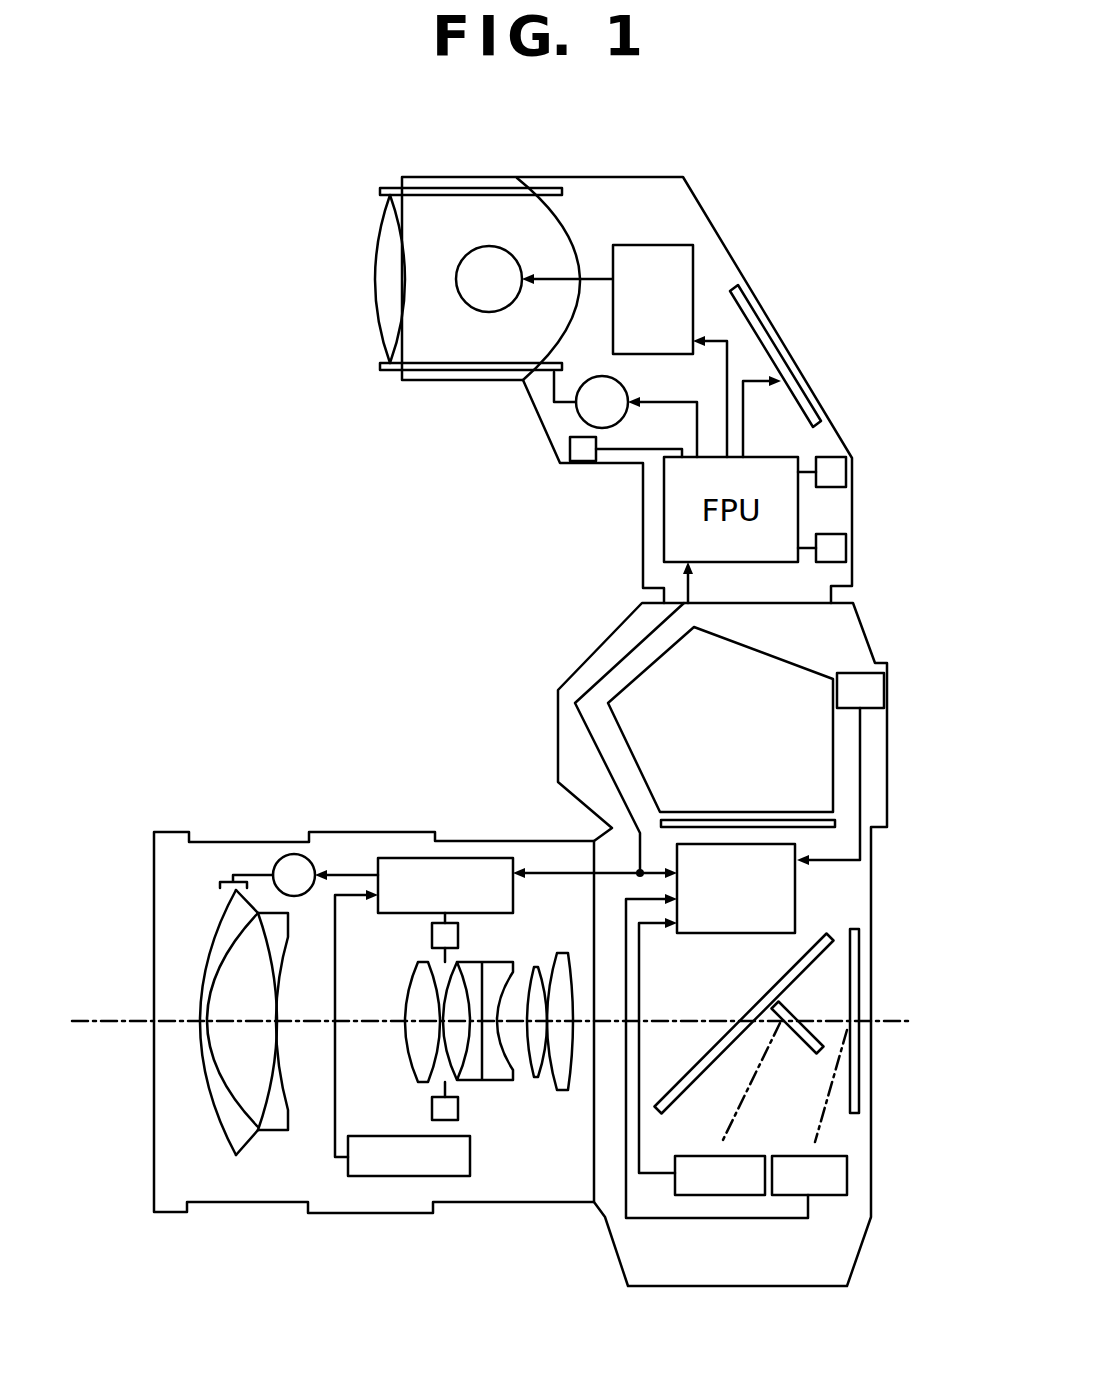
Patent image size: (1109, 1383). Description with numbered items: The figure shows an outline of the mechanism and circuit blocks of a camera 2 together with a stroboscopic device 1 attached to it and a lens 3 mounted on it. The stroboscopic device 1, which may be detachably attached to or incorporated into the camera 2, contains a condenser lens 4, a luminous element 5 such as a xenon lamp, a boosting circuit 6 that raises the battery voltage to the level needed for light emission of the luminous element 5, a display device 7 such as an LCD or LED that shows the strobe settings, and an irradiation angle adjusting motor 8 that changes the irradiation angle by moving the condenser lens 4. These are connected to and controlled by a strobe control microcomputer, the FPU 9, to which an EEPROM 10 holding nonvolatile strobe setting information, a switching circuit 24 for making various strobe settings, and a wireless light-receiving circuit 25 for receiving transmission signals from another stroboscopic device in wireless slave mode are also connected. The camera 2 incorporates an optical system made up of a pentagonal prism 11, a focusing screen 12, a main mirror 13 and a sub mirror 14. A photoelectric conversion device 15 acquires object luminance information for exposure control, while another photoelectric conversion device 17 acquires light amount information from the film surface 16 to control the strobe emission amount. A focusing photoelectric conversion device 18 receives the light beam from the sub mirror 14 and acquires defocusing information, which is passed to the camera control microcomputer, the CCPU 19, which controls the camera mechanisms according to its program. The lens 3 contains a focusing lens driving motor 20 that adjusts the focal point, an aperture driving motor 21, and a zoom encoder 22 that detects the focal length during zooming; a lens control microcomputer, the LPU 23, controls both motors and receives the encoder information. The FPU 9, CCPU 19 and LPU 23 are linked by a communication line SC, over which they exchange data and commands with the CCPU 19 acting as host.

The stroboscopic device 1 is at (604, 176).
The camera 2 is at (670, 1286).
The lens 3 is at (215, 1213).
The condenser lens 4 is at (375, 278).
The luminous element 5 is at (490, 246).
The boosting circuit 6 is at (693, 252).
The display device 7 is at (768, 316).
The irradiation angle adjusting motor 8 is at (573, 412).
The strobe control microcomputer (FPU) 9 is at (800, 523).
The EEPROM 10 is at (846, 548).
The pentagonal prism 11 is at (810, 667).
The focusing screen 12 is at (836, 826).
The main mirror 13 is at (800, 977).
The sub mirror 14 is at (800, 1043).
The photoelectric conversion device 15 is at (885, 693).
The film surface 16 is at (860, 1021).
The photoelectric conversion device 17 is at (847, 1180).
The focusing photoelectric conversion device 18 is at (728, 1195).
The camera control microcomputer (CCPU) 19 is at (797, 907).
The focusing lens driving motor 20 is at (294, 854).
The aperture driving motor 21 is at (458, 938).
The zoom encoder 22 is at (377, 1176).
The lens control microcomputer (LPU) 23 is at (444, 858).
The switching circuit 24 is at (833, 457).
The wireless light-receiving circuit 25 is at (580, 462).
The communication line SC is at (640, 642).